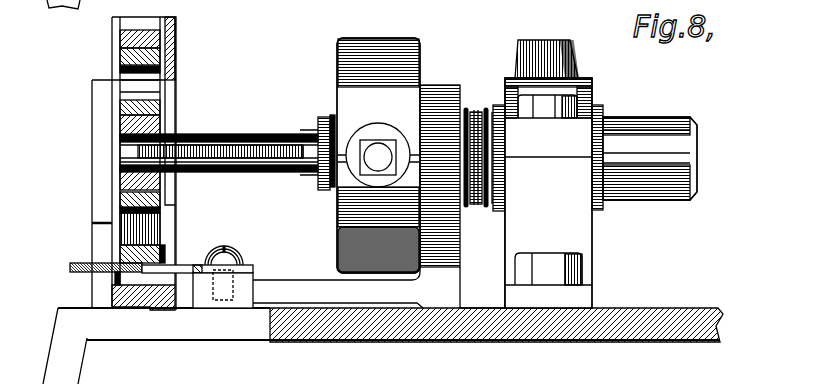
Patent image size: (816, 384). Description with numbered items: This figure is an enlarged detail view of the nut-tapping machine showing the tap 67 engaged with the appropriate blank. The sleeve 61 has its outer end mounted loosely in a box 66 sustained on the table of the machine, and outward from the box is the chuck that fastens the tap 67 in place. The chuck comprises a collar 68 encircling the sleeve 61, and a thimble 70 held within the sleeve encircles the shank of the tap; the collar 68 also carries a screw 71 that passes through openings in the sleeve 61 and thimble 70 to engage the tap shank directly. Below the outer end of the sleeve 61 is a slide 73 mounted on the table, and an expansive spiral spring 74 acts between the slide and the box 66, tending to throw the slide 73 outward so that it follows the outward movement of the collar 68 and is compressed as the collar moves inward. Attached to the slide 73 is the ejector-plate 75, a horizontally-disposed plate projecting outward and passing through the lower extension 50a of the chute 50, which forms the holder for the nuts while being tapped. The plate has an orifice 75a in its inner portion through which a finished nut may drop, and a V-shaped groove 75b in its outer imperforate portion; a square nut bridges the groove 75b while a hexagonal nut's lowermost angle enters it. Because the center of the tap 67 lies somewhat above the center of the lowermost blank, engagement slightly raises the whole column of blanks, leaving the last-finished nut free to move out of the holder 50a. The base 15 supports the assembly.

The base plate 15 is at (640, 337).
The chute 50 is at (112, 45).
The lower extension of the chute 50a is at (92, 100).
The sleeve 61 is at (645, 125).
The box 66 is at (580, 80).
The tap 67 is at (245, 122).
The collar 68 is at (342, 85).
The thimble 70 is at (320, 120).
The screw 71 is at (379, 143).
The slide 73 is at (455, 78).
The expansive spiral spring 74 is at (488, 96).
The ejector-plate 75 is at (70, 268).
The orifice 75a is at (182, 265).
The V-shaped groove 75b is at (78, 263).